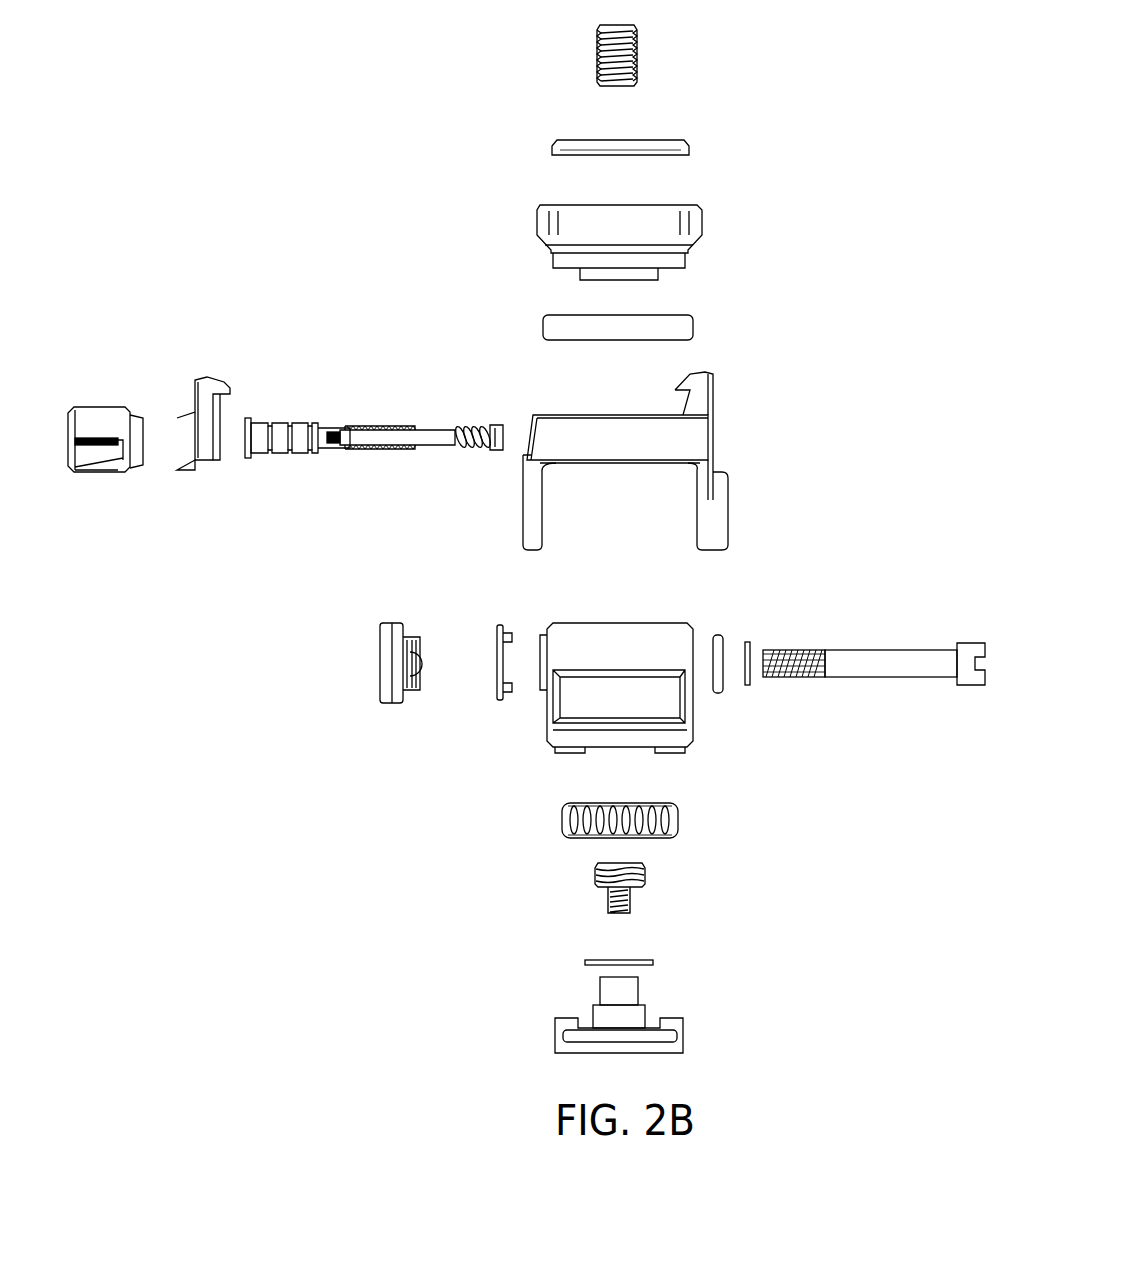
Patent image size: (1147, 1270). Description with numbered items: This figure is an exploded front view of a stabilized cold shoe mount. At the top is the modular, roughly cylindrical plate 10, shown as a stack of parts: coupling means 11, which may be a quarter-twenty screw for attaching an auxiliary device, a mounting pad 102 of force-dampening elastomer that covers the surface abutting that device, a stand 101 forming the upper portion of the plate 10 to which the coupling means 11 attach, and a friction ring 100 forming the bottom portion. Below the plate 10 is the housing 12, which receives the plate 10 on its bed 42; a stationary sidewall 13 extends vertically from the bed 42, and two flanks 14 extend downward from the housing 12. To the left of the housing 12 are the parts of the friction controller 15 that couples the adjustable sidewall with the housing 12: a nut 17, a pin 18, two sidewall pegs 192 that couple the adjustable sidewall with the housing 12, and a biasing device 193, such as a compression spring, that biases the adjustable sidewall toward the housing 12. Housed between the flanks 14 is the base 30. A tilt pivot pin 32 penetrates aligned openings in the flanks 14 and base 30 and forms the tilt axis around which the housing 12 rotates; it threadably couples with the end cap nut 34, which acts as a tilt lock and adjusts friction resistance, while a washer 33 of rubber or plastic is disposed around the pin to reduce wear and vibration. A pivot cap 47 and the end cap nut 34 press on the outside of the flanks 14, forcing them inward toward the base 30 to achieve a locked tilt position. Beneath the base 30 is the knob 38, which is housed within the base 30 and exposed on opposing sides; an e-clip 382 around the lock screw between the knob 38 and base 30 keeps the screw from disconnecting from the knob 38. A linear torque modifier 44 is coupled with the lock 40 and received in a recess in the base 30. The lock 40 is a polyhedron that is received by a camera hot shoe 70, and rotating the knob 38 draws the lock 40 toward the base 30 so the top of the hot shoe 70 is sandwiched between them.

The plate 10 is at (777, 15).
The coupling means 11 is at (637, 62).
The mounting pad 102 is at (645, 150).
The stand 101 is at (673, 224).
The friction ring 100 is at (695, 325).
The friction controller 15 is at (435, 305).
The nut 17 is at (87, 417).
The stationary sidewall 13 is at (185, 423).
The pin 18 is at (257, 427).
The sidewall pegs 192 is at (403, 435).
The biasing device 193 is at (462, 427).
The housing 12 is at (658, 471).
The bed 42 is at (678, 435).
The flanks 14 is at (628, 502).
The base 30 is at (620, 658).
The end cap nut 34 is at (505, 625).
The washer 33 is at (725, 648).
The tilt pivot pin 32 is at (874, 672).
The pivot cap 47 is at (970, 648).
The knob 38 is at (563, 820).
The e-clip 382 is at (585, 963).
The linear torque modifier 44 is at (600, 1013).
The camera hot shoe 70 is at (675, 1025).
The lock 40 is at (606, 1019).